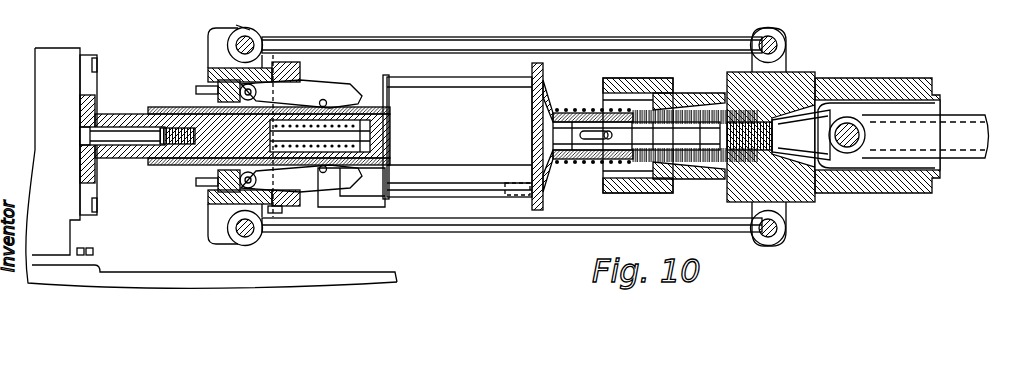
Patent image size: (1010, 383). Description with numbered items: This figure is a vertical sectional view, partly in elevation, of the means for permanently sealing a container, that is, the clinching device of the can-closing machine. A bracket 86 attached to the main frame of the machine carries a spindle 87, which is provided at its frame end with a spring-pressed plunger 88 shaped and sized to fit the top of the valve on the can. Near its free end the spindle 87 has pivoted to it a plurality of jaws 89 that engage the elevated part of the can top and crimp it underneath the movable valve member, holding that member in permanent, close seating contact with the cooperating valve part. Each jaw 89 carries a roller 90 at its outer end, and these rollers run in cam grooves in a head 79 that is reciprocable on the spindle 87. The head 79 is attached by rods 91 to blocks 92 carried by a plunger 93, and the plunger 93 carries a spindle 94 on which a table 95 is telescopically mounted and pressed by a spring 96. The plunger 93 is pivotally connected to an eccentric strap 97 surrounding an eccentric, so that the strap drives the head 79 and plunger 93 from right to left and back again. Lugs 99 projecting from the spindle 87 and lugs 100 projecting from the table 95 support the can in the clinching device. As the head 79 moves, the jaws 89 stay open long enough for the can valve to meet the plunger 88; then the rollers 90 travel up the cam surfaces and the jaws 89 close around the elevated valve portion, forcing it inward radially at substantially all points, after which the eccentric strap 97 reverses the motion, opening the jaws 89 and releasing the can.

The bracket 86 is at (60, 68).
The spindle 87 is at (125, 115).
The head 79 is at (226, 42).
The roller 90 is at (230, 182).
The jaws 89 is at (305, 90).
The rods 91 is at (455, 50).
The blocks 92 is at (780, 92).
The plunger 93 is at (830, 100).
The eccentric strap 97 is at (935, 150).
The spring-pressed plunger 88 is at (444, 137).
The lugs 99 is at (328, 200).
The lugs 100 is at (520, 200).
The table 95 is at (546, 110).
The spring 96 is at (587, 110).
The spindle 94 is at (622, 130).